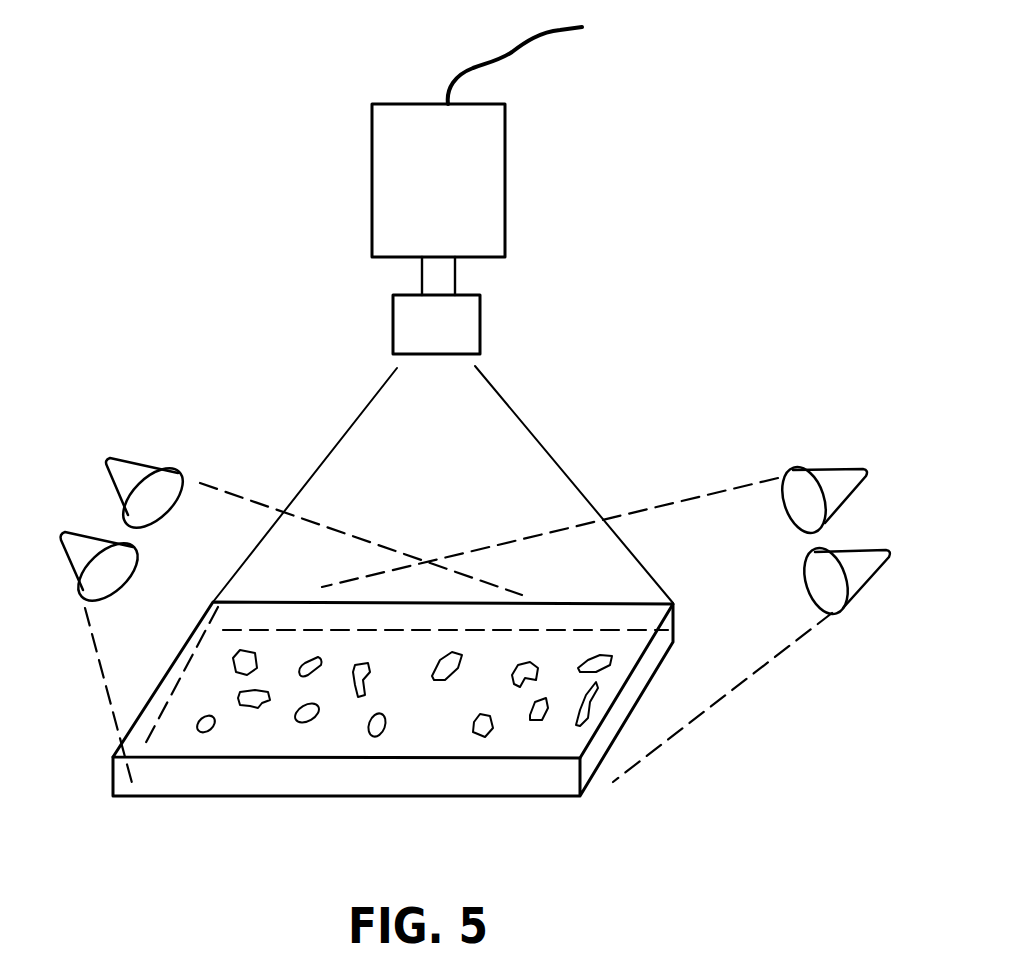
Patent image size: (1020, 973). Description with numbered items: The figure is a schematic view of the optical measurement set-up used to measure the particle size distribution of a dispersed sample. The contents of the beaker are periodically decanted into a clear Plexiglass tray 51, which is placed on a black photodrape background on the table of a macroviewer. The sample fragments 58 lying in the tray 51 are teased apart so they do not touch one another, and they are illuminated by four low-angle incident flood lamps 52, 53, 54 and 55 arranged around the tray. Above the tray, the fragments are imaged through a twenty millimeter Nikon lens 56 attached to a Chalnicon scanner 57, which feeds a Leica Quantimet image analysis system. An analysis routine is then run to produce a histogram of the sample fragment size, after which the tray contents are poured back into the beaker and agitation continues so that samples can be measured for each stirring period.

The clear Plexiglass tray 51 is at (296, 786).
The low-angle incident flood lamp 52 is at (142, 470).
The low-angle incident flood lamp 53 is at (75, 568).
The low-angle incident flood lamp 54 is at (834, 476).
The low-angle incident flood lamp 55 is at (858, 577).
The nikon lens 56 is at (470, 325).
The Chalnicon scanner 57 is at (500, 182).
The sample fragments 58 is at (373, 672).